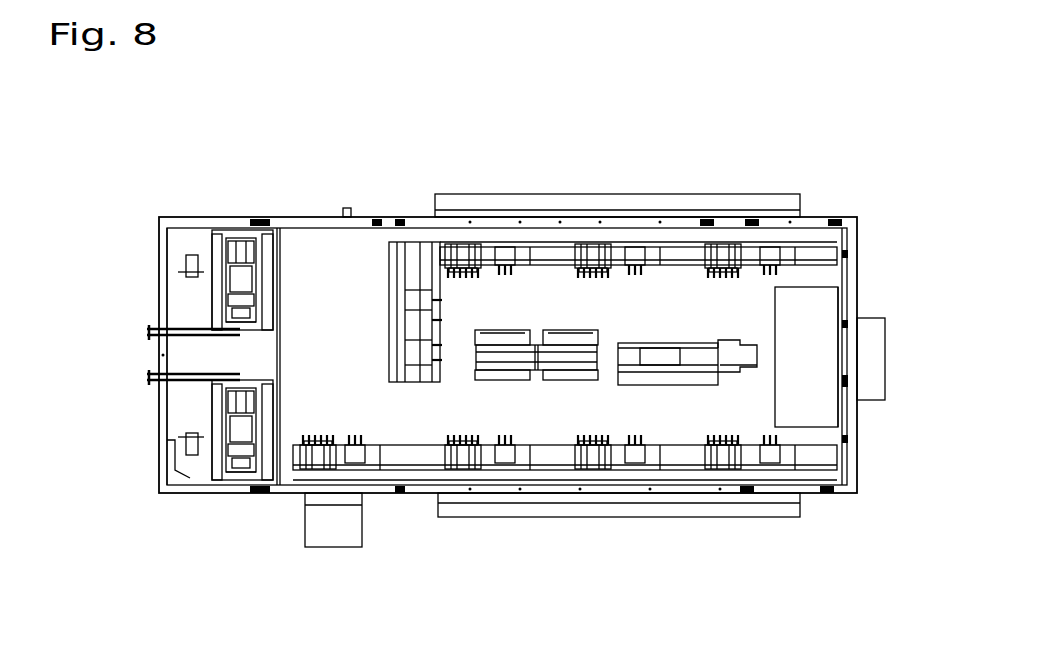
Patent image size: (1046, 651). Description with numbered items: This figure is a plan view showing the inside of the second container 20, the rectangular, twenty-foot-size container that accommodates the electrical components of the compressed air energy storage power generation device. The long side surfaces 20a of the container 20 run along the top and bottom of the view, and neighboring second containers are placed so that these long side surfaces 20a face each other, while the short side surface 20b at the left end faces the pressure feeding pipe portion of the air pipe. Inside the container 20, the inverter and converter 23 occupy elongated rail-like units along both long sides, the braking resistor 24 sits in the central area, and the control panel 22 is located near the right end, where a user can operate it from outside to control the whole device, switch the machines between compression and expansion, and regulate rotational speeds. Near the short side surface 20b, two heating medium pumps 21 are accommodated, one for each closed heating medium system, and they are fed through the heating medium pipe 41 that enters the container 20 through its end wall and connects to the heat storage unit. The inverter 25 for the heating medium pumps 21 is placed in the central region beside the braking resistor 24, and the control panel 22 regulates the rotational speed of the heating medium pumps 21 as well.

The second container 20 is at (754, 180).
The long side surface 20a is at (415, 493).
The short side surface 20b is at (155, 433).
The heating medium pump 21 is at (247, 237).
The control panel 22 is at (817, 307).
The inverter and converter 23 is at (480, 243).
The braking resistor 24 is at (552, 360).
The inverter 25 is at (695, 355).
The heating medium pipe 41 is at (146, 376).